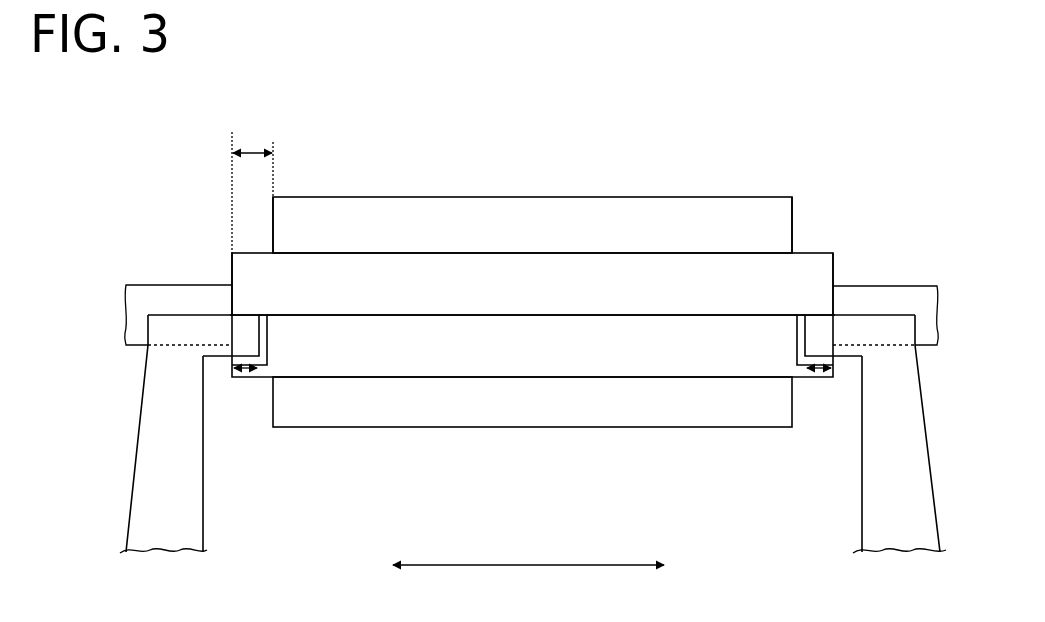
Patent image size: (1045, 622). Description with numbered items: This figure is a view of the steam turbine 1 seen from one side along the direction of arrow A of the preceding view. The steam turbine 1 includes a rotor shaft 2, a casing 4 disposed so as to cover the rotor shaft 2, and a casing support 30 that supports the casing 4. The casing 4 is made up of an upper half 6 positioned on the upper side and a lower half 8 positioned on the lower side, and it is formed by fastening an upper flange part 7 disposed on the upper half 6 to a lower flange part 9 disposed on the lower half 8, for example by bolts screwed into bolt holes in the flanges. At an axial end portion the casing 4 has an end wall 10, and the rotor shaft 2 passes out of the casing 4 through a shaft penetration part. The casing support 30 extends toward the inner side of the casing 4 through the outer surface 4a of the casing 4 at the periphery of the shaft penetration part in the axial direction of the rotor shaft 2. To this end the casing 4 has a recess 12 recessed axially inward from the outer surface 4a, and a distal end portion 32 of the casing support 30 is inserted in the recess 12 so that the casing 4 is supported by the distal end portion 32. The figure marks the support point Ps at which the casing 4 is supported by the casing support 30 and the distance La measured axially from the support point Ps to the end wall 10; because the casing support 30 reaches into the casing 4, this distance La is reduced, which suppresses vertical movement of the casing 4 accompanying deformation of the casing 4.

The steam turbine 1 is at (864, 110).
The rotor shaft 2 is at (150, 297).
The casing 4 is at (531, 307).
The outer surface 4a is at (230, 262).
The upper half 6 is at (590, 211).
The upper flange part 7 is at (368, 267).
The lower half 8 is at (586, 428).
The lower flange part 9 is at (387, 358).
The end wall 10 is at (274, 212).
The recess 12 is at (253, 370).
The casing support 30 is at (149, 405).
The distal end portion 32 is at (238, 370).
The support point Ps is at (232, 313).
The distance La is at (252, 189).